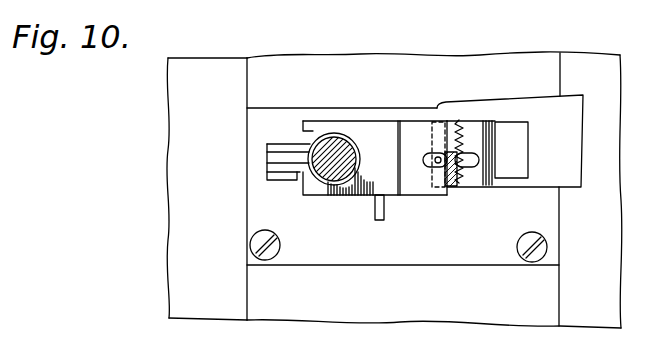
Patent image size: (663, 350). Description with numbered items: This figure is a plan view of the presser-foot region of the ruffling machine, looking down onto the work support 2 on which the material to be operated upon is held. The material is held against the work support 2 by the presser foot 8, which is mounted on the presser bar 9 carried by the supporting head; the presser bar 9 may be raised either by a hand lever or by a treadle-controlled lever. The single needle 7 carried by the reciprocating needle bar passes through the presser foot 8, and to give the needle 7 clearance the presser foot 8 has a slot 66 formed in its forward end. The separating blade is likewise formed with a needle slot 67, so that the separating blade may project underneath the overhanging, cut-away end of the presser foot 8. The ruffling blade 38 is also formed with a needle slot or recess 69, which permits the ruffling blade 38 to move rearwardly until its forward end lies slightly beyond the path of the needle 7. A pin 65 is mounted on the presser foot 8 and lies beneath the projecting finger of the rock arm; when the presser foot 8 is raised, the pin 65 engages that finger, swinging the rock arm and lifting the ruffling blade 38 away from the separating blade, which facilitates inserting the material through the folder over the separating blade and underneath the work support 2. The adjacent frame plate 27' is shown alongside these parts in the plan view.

The work support 2 is at (210, 70).
The needle 7 is at (434, 164).
The presser foot 8 is at (361, 197).
The presser bar 9 is at (326, 186).
The frame plate 27' is at (590, 190).
The ruffling blade 38 is at (510, 124).
The pin 65 is at (384, 217).
The slot 66 is at (432, 155).
The needle slot 67 is at (458, 152).
The needle slot or recess 69 is at (470, 162).